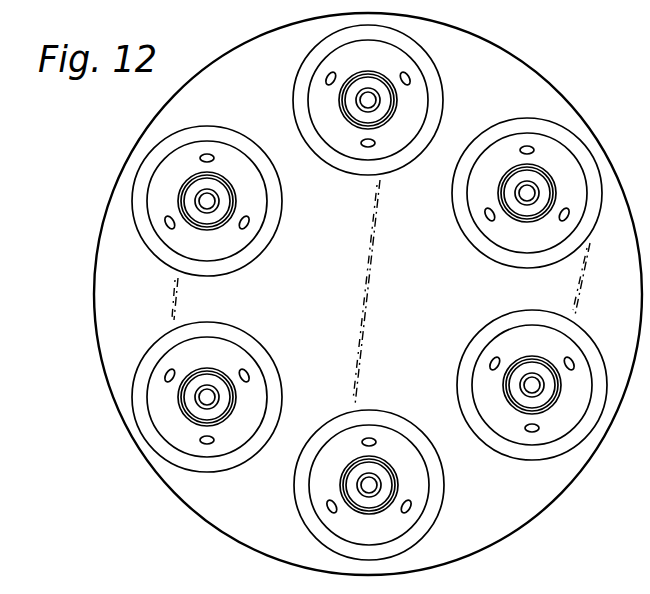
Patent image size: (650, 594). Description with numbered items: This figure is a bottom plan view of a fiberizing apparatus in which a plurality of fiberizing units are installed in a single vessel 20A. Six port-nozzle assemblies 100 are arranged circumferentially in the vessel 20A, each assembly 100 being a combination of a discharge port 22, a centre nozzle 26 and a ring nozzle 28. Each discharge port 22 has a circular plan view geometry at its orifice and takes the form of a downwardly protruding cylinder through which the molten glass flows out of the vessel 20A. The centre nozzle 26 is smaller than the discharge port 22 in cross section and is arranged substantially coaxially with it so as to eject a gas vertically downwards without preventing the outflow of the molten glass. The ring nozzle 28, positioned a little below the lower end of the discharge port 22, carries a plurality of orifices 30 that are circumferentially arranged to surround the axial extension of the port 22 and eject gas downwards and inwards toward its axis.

The vessel 20A is at (207, 503).
The discharge port 22 is at (190, 375).
The centre nozzle 26 is at (215, 370).
The ring nozzle 28 is at (275, 412).
The orifices 30 is at (248, 377).
The port-nozzle assemblies 100 is at (362, 375).